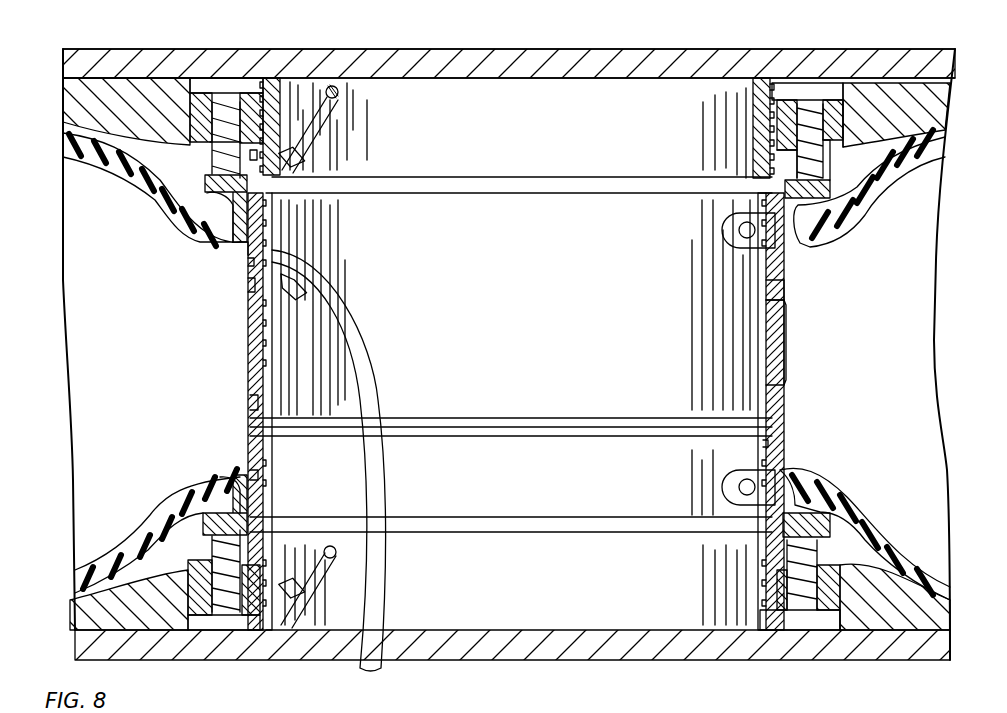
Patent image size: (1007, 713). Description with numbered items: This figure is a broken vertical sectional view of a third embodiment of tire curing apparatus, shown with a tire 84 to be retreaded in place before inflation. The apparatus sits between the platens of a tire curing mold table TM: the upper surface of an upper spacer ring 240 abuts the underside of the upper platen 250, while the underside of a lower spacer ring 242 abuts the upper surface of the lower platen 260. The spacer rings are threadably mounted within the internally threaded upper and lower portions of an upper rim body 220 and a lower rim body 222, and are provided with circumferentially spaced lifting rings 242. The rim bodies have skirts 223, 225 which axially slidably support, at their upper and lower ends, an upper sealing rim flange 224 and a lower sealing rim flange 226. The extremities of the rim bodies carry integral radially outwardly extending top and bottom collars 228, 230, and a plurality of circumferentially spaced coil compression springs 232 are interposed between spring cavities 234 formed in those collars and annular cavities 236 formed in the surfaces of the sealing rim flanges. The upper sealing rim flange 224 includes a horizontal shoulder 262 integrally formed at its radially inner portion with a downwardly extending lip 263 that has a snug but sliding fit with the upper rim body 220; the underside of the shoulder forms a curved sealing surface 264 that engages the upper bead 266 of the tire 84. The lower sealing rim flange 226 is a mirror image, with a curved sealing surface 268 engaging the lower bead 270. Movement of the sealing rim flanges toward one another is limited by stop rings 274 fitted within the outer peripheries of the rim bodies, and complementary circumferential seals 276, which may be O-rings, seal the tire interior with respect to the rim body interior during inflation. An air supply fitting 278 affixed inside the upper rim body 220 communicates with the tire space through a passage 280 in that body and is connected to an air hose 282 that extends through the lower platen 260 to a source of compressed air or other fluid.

The tire curing mold table TM is at (480, 65).
The upper platen 250 is at (566, 72).
The lower platen 260 is at (555, 642).
The upper spacer ring 240 is at (272, 78).
The lower spacer ring 242 is at (340, 93).
The horizontal shoulder 262 is at (200, 205).
The curved sealing surface 264 is at (216, 225).
The downwardly extending lip 263 is at (245, 222).
The upper bead 266 is at (244, 248).
The stop rings 274 is at (248, 263).
The passage 280 is at (252, 287).
The circumferential seals 276 is at (280, 187).
The air supply fitting 278 is at (292, 276).
The air hose 282 is at (362, 406).
The upper sealing rim flange 224 is at (783, 211).
The upper rim body 220 is at (793, 289).
The lower rim body 222 is at (797, 348).
The skirt 223 is at (770, 318).
The skirt 225 is at (787, 367).
The lower sealing rim flange 226 is at (822, 520).
The top collar 228 is at (830, 100).
The bottom collar 230 is at (830, 610).
The coil compression springs 232 is at (812, 125).
The spring cavities 234 is at (805, 110).
The annular cavities 236 is at (818, 176).
The curved sealing surface 268 is at (185, 515).
The lower bead 270 is at (215, 492).
The tire 84 is at (105, 562).